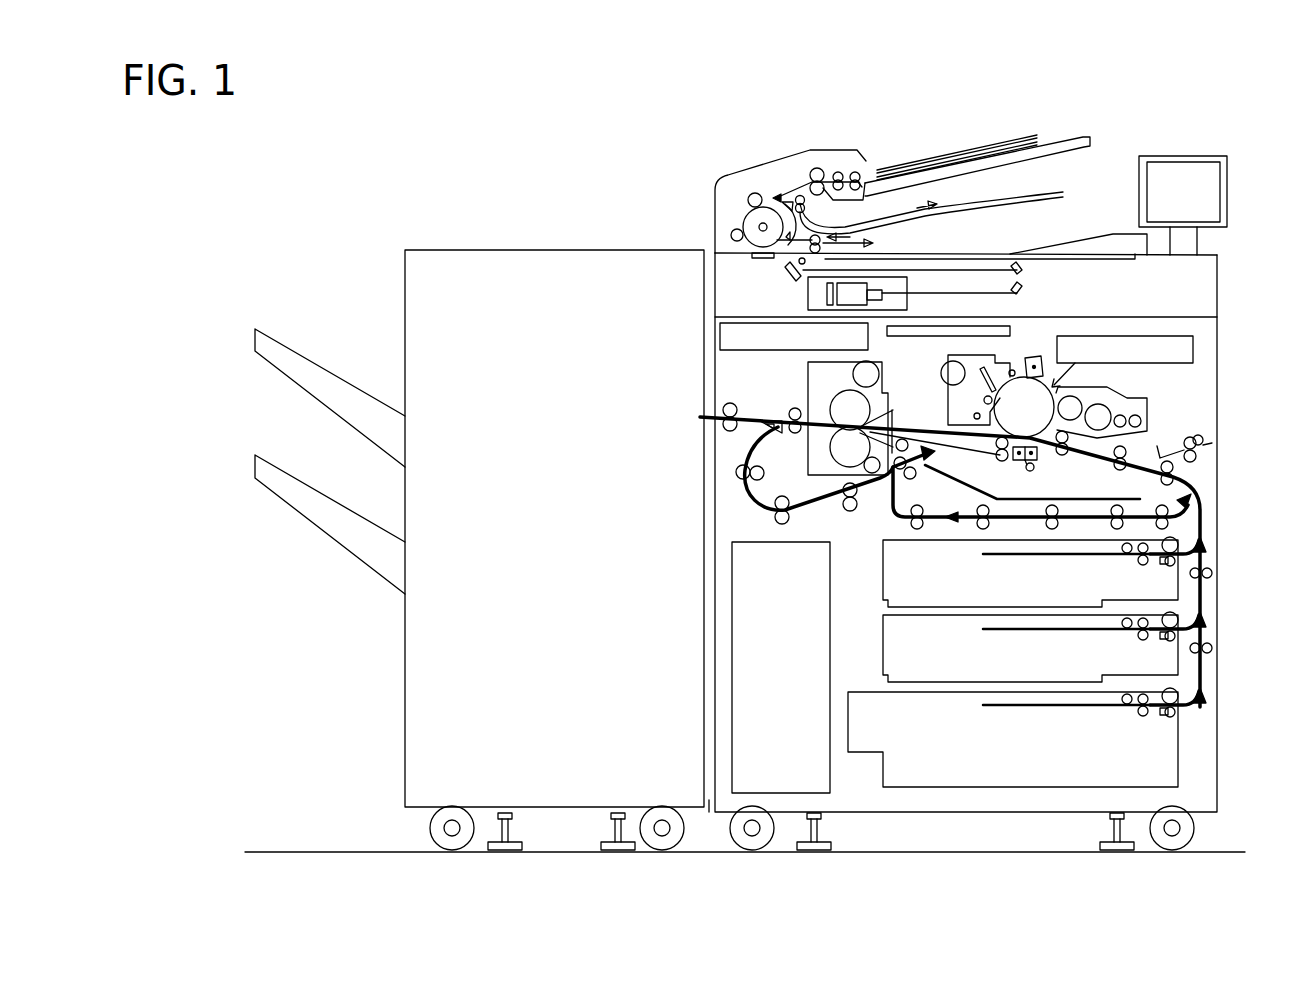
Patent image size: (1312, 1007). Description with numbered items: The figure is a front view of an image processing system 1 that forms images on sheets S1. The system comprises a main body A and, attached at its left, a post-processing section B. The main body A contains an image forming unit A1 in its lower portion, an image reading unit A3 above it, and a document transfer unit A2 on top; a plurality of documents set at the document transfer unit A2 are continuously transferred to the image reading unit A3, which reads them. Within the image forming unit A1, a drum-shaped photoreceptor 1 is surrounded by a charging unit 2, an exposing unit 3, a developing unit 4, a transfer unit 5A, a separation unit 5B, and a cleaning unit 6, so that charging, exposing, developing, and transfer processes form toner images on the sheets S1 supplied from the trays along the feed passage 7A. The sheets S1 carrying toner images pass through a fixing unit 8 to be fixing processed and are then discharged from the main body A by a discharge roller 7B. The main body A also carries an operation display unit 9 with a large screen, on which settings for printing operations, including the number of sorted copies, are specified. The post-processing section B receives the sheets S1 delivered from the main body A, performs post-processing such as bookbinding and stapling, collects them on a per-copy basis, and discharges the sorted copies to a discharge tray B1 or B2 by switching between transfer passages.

The image processing system / photoreceptor 1 is at (832, 142).
The charging unit 2 is at (1026, 357).
The exposing unit 3 is at (1133, 343).
The developing unit 4 is at (1127, 398).
The transfer unit 5A is at (1040, 460).
The separation unit 5B is at (1015, 461).
The cleaning unit 6 is at (952, 410).
The sheet feeding conveyance path 7A is at (1170, 590).
The discharge roller 7B is at (728, 403).
The fixing unit 8 is at (888, 378).
The operation display unit 9 is at (1185, 156).
The main body A is at (1087, 122).
The image forming unit A1 is at (1232, 385).
The document transfer unit A2 is at (932, 147).
The image reading unit A3 is at (1230, 282).
The post-processing section B is at (570, 232).
The discharge tray B1 is at (297, 350).
The discharge tray B2 is at (299, 475).
The sheets S1 is at (1060, 556).